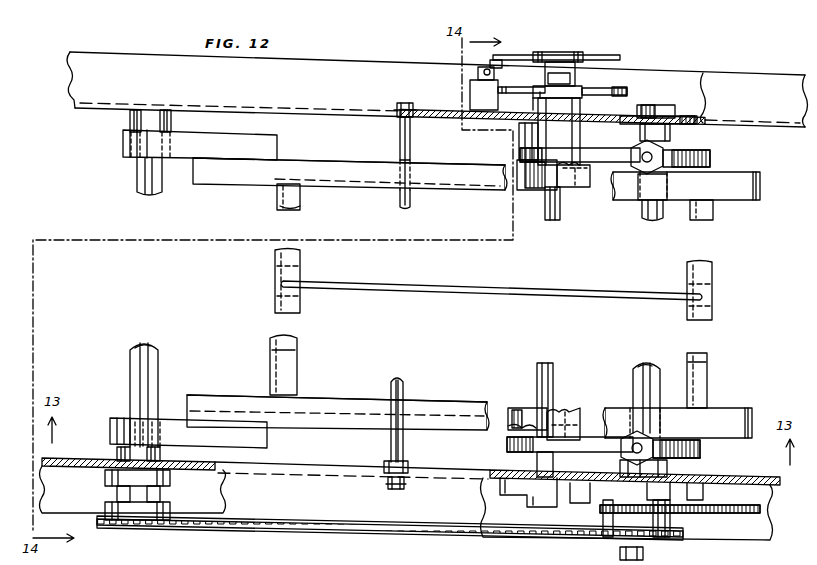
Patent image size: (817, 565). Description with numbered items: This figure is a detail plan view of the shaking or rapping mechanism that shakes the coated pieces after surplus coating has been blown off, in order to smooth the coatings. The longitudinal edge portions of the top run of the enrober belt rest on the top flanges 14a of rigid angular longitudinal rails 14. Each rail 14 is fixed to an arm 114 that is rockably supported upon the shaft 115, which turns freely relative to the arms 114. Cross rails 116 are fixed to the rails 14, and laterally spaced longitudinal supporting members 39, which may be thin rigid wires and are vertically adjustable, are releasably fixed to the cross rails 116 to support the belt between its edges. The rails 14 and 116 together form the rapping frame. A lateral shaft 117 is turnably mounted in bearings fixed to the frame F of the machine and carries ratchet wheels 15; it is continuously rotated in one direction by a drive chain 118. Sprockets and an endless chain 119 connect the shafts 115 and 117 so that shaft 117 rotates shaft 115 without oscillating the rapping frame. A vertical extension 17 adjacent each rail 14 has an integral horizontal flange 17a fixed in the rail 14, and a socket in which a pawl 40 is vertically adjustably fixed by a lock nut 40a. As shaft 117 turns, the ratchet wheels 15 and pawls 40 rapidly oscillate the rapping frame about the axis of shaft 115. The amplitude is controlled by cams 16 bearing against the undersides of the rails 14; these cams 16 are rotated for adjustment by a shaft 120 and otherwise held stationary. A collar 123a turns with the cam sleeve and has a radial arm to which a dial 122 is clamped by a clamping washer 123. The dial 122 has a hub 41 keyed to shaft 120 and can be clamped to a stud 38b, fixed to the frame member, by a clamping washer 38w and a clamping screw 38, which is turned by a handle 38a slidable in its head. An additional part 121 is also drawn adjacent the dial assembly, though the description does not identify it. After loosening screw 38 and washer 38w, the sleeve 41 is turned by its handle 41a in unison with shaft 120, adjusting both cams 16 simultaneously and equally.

The frame F is at (752, 80).
The longitudinal rail 14 is at (241, 180).
The top flange 14a is at (350, 166).
The ratchet wheel 15 is at (710, 158).
The cam 16 is at (516, 410).
The vertical extension 17 is at (588, 153).
The horizontal flange 17a is at (527, 193).
The clamping screw 38 is at (483, 68).
The handle 38a is at (500, 86).
The stud 38b is at (481, 98).
The clamping washer 38w is at (477, 84).
The longitudinal supporting member 39 is at (418, 292).
The pawl 40 is at (690, 460).
The lock nut 40a is at (664, 150).
The hub 41 is at (577, 62).
The handle 41a is at (522, 57).
The arm 114 is at (277, 145).
The shaft 115 is at (160, 190).
The cross rail 116 is at (702, 222).
The lateral shaft 117 is at (647, 220).
The drive chain 118 is at (762, 510).
The endless chain 119 is at (483, 533).
The shaft 120 is at (557, 220).
The cylinder 121 is at (571, 130).
The dial 122 is at (627, 91).
The clamping washer 123 is at (585, 85).
The collar 123a is at (517, 101).